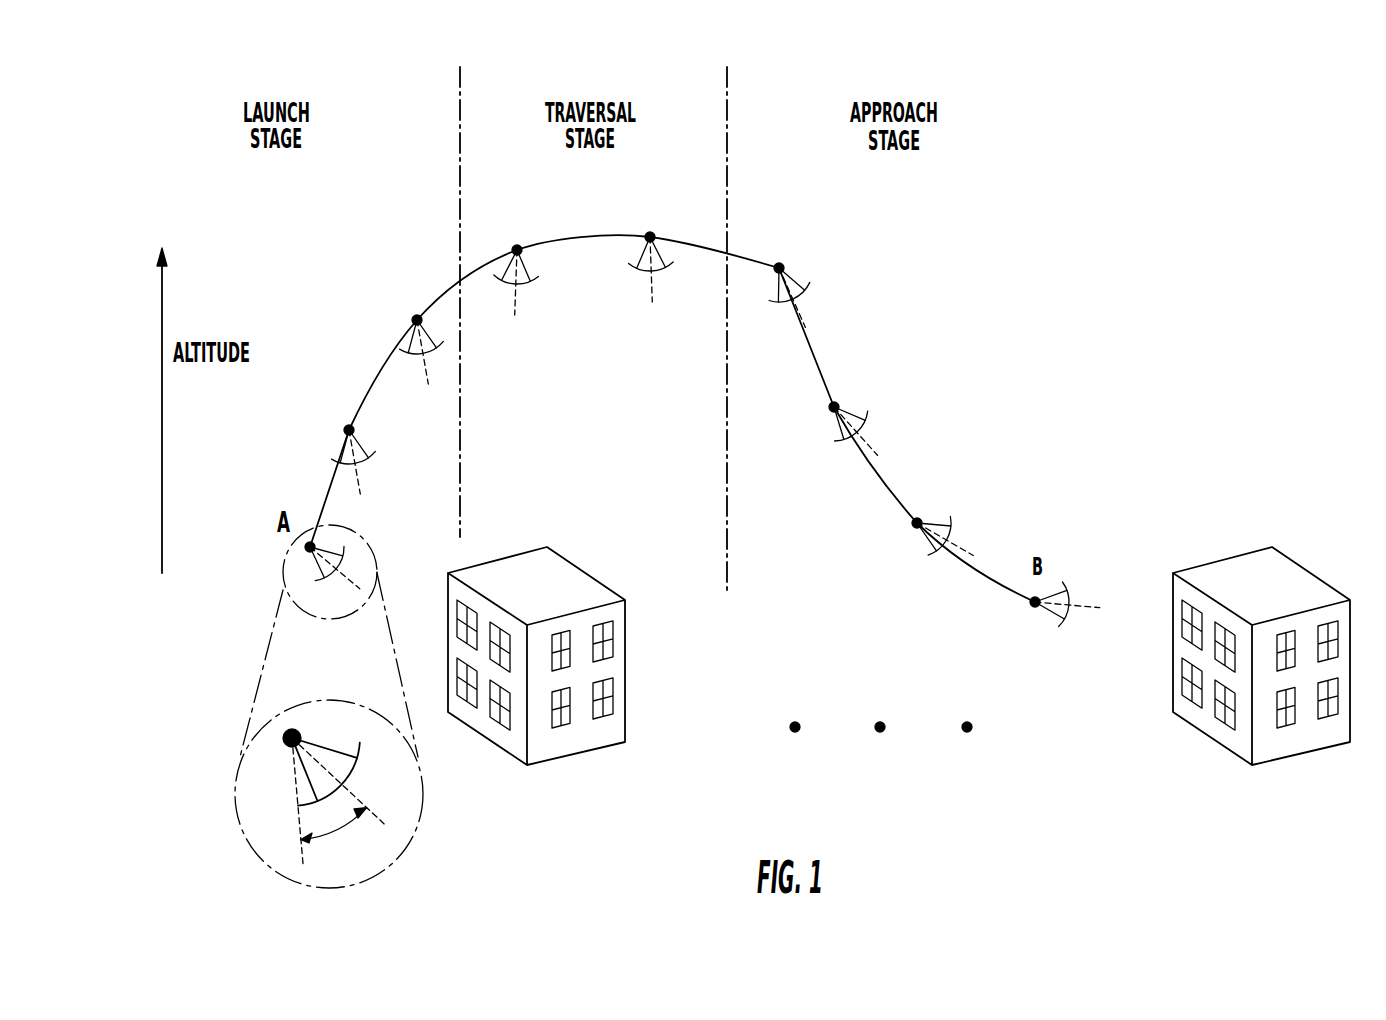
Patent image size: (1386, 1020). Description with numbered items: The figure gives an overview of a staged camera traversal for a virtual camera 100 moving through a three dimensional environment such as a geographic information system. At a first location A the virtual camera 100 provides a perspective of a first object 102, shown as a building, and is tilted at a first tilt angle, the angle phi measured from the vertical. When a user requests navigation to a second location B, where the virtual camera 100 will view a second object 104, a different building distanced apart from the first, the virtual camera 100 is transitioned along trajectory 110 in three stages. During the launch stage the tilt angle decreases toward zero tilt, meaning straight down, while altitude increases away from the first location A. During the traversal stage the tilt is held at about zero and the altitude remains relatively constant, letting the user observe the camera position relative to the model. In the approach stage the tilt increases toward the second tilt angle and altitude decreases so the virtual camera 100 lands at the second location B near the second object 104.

The virtual camera 100 is at (316, 580).
The first object 102 is at (585, 590).
The second object 104 is at (1250, 570).
The trajectory 110 is at (815, 367).